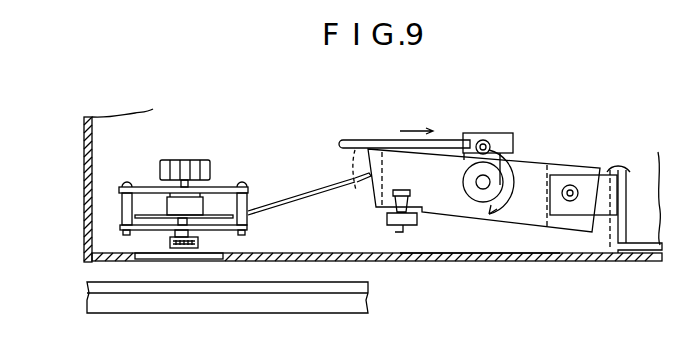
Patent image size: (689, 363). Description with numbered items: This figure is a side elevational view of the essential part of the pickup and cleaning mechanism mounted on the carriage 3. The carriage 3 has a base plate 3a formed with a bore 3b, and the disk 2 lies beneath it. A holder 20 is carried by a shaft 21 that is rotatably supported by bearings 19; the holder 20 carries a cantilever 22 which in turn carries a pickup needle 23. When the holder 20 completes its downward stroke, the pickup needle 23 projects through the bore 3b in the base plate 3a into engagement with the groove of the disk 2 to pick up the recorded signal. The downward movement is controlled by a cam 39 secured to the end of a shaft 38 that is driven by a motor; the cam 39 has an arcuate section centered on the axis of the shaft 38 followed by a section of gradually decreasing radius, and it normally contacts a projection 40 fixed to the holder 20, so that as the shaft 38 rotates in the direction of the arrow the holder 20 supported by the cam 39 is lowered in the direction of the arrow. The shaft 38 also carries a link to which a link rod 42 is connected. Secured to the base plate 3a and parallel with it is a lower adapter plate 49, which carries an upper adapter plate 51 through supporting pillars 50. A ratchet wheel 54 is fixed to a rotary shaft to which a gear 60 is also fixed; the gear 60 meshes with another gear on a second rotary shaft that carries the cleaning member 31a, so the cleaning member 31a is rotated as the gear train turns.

The disk 2 is at (256, 286).
The carriage 3 is at (87, 226).
The base plate 3a is at (503, 261).
The bore 3b is at (147, 258).
The bearings 19 is at (634, 202).
The holder 20 is at (436, 214).
The shaft 21 is at (570, 202).
The cantilever 22 is at (302, 192).
The pickup needle 23 is at (168, 234).
The cleaning member 31a is at (183, 248).
The shaft 38 is at (491, 181).
The cam 39 is at (492, 214).
The projection 40 is at (506, 137).
The link rod 42 is at (362, 146).
The lower adapter plate 49 is at (220, 219).
The supporting pillars 50 is at (120, 205).
The upper adapter plate 51 is at (213, 187).
The ratchet wheel 54 is at (184, 160).
The gear 60 is at (165, 210).